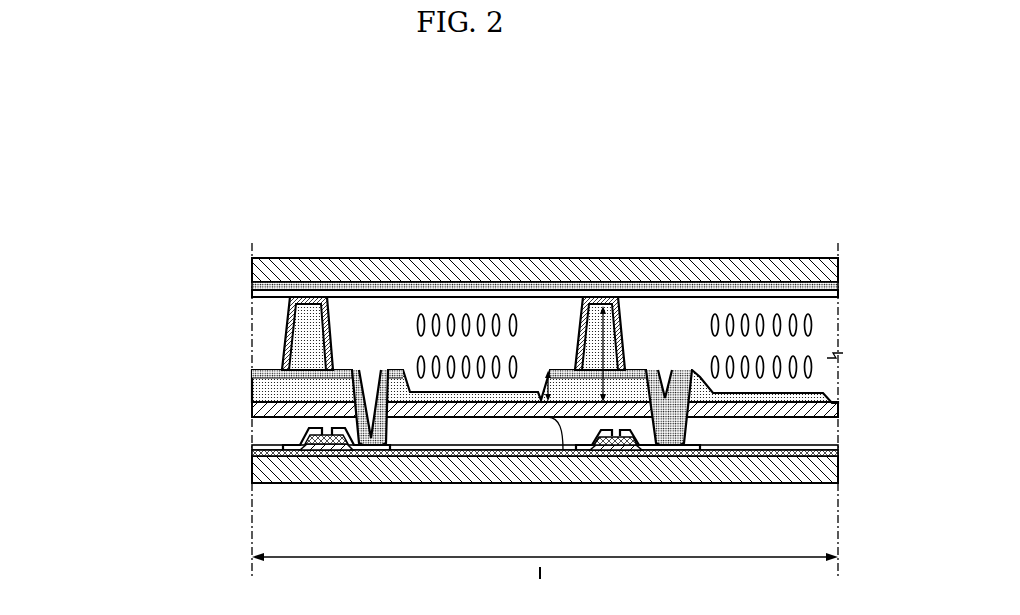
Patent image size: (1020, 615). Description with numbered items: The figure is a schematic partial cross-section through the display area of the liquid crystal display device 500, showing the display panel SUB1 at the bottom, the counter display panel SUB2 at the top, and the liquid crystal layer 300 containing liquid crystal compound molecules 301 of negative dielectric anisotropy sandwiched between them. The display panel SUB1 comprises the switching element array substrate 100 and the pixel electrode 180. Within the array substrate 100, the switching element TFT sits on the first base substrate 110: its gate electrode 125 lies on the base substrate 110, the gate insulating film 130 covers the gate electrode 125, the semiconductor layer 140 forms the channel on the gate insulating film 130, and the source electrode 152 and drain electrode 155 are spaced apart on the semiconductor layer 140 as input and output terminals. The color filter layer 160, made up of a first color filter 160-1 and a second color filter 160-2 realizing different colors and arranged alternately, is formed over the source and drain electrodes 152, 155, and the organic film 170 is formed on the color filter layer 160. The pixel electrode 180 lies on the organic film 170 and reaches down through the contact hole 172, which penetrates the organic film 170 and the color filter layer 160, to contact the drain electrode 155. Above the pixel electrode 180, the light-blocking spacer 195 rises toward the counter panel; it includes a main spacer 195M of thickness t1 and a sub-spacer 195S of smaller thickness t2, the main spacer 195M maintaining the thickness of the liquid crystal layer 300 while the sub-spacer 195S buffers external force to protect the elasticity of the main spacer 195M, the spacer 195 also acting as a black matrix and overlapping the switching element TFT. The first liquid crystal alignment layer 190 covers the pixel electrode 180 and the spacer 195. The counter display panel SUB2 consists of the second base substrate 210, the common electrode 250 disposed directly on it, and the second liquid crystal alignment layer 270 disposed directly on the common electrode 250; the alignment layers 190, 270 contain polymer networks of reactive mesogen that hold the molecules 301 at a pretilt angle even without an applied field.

The switching element array substrate 100 is at (96, 352).
The first base substrate 110 is at (267, 470).
The gate electrode 125 is at (325, 446).
The gate insulating film 130 is at (300, 451).
The semiconductor layer 140 is at (320, 436).
The source electrode 152 is at (300, 446).
The drain electrode 155 is at (335, 428).
The color filter layer 160 is at (157, 517).
The first color filter 160-1 is at (272, 452).
The second color filter 160-2 is at (277, 457).
The organic film 170 is at (297, 402).
The contact hole 172 is at (371, 432).
The pixel electrode 180 is at (280, 357).
The first liquid crystal alignment layer 190 is at (300, 298).
The light-blocking spacer 195 is at (317, 337).
The main spacer 195M is at (612, 333).
The sub-spacer 195S is at (652, 372).
The second base substrate 210 is at (260, 270).
The common electrode 250 is at (258, 287).
The second liquid crystal alignment layer 270 is at (258, 294).
The liquid crystal layer 300 is at (656, 292).
The liquid crystal compound molecules 301 is at (490, 325).
The liquid crystal display device 500 is at (529, 146).
The display panel SUB1 is at (55, 428).
The counter display panel SUB2 is at (182, 252).
The switching element TFT is at (157, 378).
The thickness of the main spacer t1 is at (605, 346).
The thickness of the sub-spacer t2 is at (547, 388).